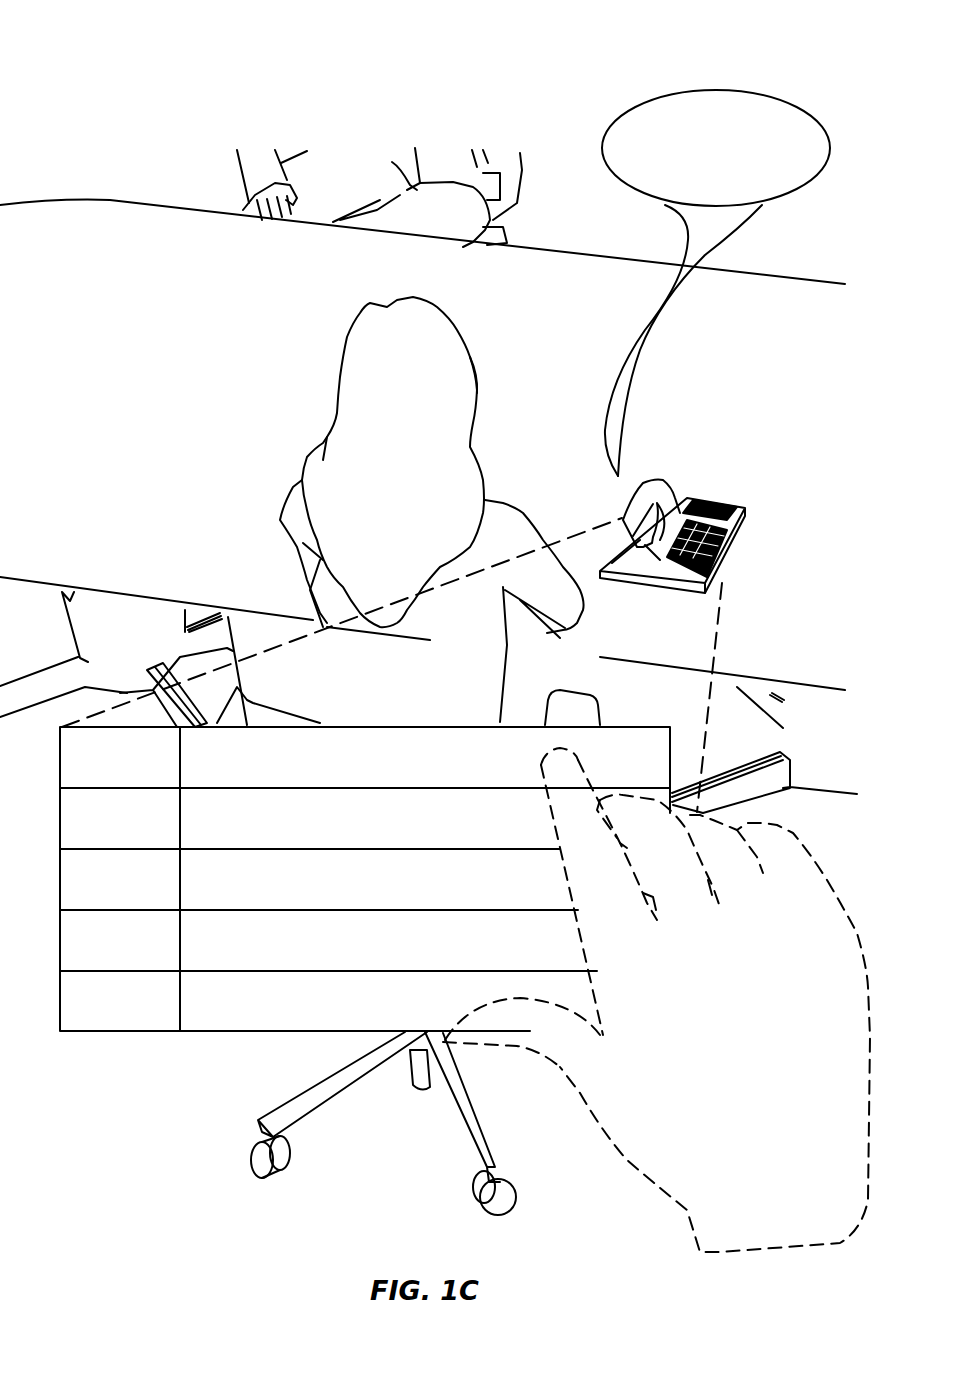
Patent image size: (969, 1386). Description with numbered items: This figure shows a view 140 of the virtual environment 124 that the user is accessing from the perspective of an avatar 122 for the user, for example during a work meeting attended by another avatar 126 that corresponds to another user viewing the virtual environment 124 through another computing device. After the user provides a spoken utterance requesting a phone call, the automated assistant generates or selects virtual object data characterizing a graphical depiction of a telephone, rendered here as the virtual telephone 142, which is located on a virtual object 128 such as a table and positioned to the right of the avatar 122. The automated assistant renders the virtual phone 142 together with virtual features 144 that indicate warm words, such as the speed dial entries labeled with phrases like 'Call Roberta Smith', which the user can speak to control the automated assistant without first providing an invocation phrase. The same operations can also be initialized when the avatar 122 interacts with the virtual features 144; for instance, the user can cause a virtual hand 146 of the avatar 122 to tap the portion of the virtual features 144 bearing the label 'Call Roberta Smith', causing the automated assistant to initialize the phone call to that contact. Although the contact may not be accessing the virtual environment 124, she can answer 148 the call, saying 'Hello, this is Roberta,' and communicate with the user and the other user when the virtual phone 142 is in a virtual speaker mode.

The view 140 is at (95, 85).
The other avatar 126 is at (379, 197).
The virtual object 128 is at (428, 594).
The avatar 122 is at (432, 509).
The answer 148 is at (608, 122).
The virtual telephone 142 is at (718, 497).
The virtual features 144 is at (218, 1084).
The virtual hand 146 is at (656, 1000).
The virtual environment 124 is at (262, 1123).